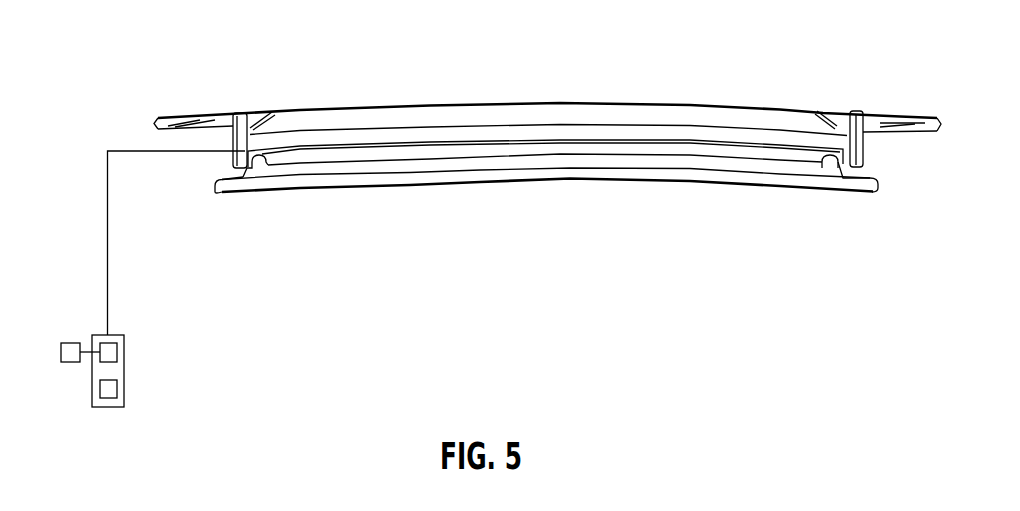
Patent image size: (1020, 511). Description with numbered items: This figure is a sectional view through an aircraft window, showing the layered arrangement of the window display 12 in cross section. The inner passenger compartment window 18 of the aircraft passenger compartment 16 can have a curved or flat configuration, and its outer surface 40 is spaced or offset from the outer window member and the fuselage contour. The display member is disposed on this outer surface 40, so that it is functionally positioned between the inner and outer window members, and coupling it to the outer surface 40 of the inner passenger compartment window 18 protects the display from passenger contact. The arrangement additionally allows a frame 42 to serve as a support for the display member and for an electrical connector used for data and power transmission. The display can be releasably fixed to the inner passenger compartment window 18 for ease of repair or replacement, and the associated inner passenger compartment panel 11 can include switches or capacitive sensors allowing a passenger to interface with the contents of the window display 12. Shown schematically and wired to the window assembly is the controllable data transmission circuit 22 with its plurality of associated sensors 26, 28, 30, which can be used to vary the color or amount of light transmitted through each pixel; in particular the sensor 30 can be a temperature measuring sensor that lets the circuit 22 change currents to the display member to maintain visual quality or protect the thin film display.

The inner passenger compartment panel 11 is at (233, 194).
The window display 12 is at (597, 125).
The aircraft passenger compartment 16 is at (463, 104).
The inner passenger compartment window 18 is at (438, 141).
The outer surface 40 is at (357, 134).
The frame 42 is at (867, 148).
The controllable data transmission circuit 22 is at (195, 279).
The sensor 26 is at (80, 352).
The sensor 28 is at (108, 352).
The sensor 30 is at (108, 389).